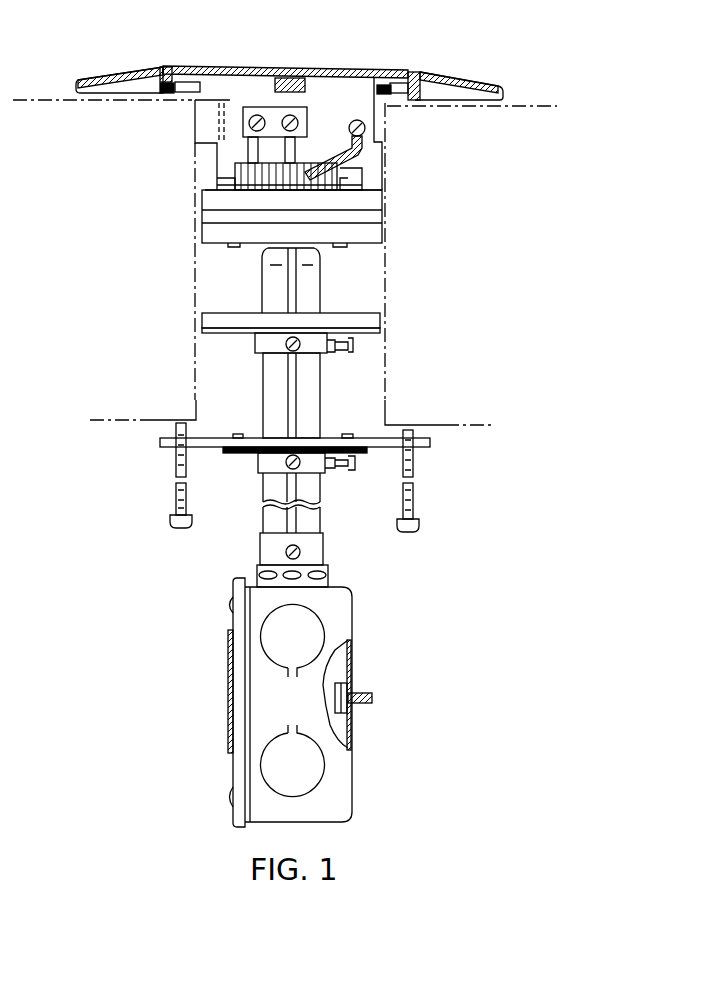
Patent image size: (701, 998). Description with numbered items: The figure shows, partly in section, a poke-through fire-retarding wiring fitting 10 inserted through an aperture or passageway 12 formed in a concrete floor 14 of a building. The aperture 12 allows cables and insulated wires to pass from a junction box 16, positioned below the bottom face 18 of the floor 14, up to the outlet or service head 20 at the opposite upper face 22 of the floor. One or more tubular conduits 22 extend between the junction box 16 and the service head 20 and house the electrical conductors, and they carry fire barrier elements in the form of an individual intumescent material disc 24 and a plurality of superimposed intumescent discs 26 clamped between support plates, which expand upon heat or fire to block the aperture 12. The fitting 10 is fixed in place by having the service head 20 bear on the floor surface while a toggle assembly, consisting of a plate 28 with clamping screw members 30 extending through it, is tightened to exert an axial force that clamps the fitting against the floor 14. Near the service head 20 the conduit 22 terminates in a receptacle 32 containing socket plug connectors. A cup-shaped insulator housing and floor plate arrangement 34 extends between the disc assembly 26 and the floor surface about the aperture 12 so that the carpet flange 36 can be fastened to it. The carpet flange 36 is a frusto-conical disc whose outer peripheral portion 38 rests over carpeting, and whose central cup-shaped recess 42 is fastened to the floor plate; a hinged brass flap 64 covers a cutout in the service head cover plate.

The poke-through fire-retarding wiring fitting 10 is at (212, 371).
The aperture or passageway 12 is at (386, 292).
The concrete floor 14 is at (445, 430).
The junction box 16 is at (350, 660).
The bottom face 18 is at (150, 411).
The service head 20 is at (447, 62).
The upper face / tubular conduit 22 is at (545, 108).
The intumescent material disc 24 is at (201, 325).
The superimposed intumescent discs 26 is at (203, 229).
The plate 28 is at (430, 447).
The clamping screw members 30 is at (175, 510).
The receptacle 32 is at (377, 135).
The cup-shaped insulator housing and floor plate arrangement 34 is at (213, 183).
The carpet flange 36 is at (140, 67).
The outer peripheral portion 38 is at (455, 95).
The cup-shaped recess 42 is at (162, 90).
The flap 64 is at (232, 66).